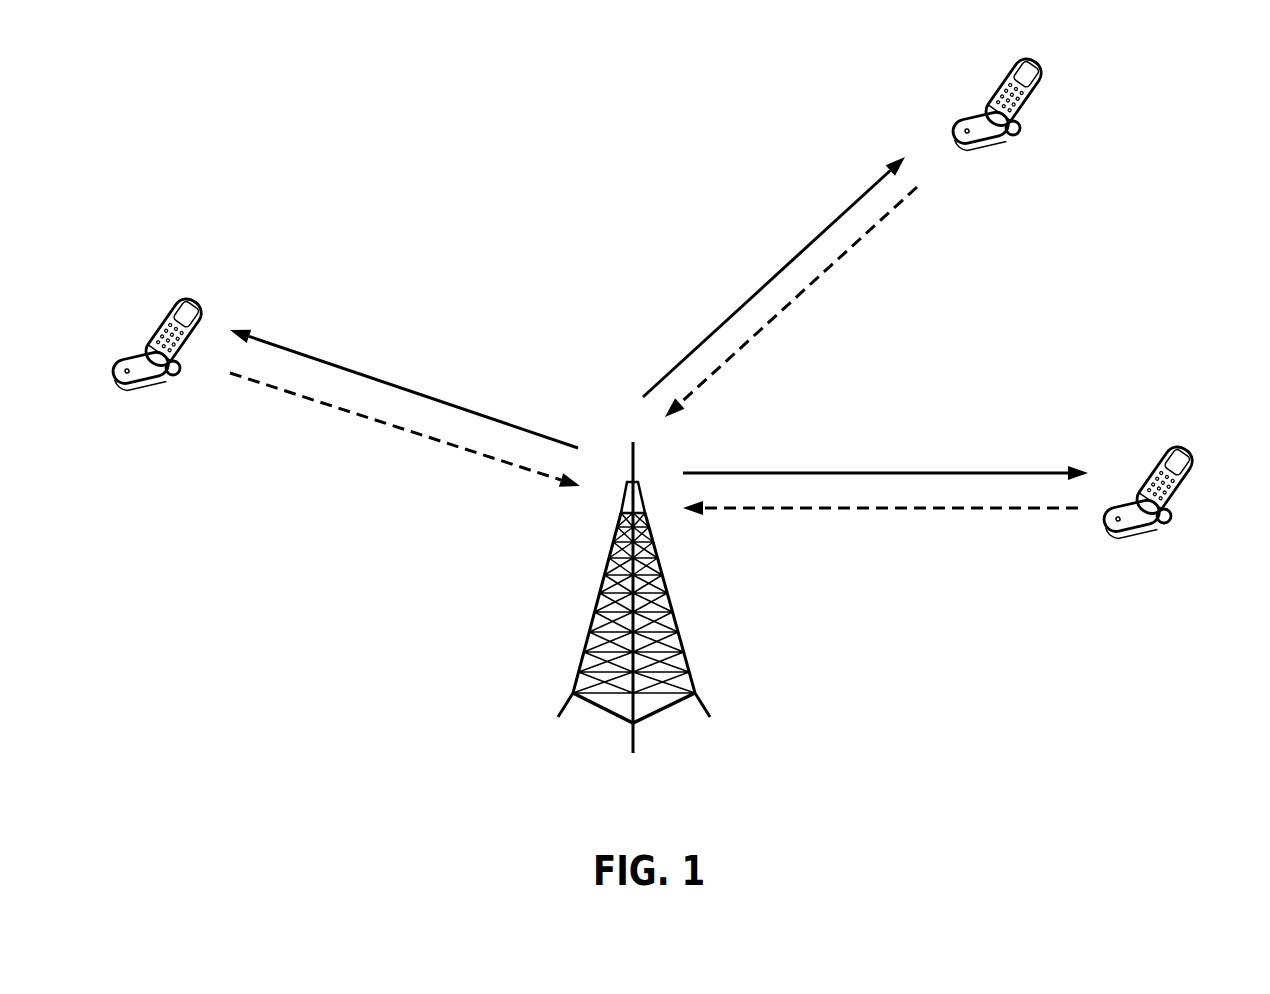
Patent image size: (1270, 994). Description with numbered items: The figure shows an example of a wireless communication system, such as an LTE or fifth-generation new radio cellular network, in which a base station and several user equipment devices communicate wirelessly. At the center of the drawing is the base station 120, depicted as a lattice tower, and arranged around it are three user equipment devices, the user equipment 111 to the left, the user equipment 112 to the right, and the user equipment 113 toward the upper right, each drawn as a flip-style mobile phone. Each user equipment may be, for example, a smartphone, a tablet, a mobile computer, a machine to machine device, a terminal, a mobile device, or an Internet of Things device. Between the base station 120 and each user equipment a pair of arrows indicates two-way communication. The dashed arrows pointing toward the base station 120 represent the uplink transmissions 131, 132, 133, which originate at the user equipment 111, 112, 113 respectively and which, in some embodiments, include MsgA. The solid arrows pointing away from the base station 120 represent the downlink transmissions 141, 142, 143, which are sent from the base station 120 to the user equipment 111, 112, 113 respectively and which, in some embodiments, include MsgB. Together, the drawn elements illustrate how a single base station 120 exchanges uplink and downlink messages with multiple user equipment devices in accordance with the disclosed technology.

The user equipment 111 is at (167, 390).
The user equipment 112 is at (1157, 535).
The user equipment 113 is at (1007, 147).
The base station 120 is at (690, 675).
The uplink transmission 131 is at (443, 445).
The uplink transmission 132 is at (847, 510).
The uplink transmission 133 is at (818, 277).
The downlink transmission 141 is at (338, 365).
The downlink transmission 142 is at (998, 472).
The downlink transmission 143 is at (823, 228).